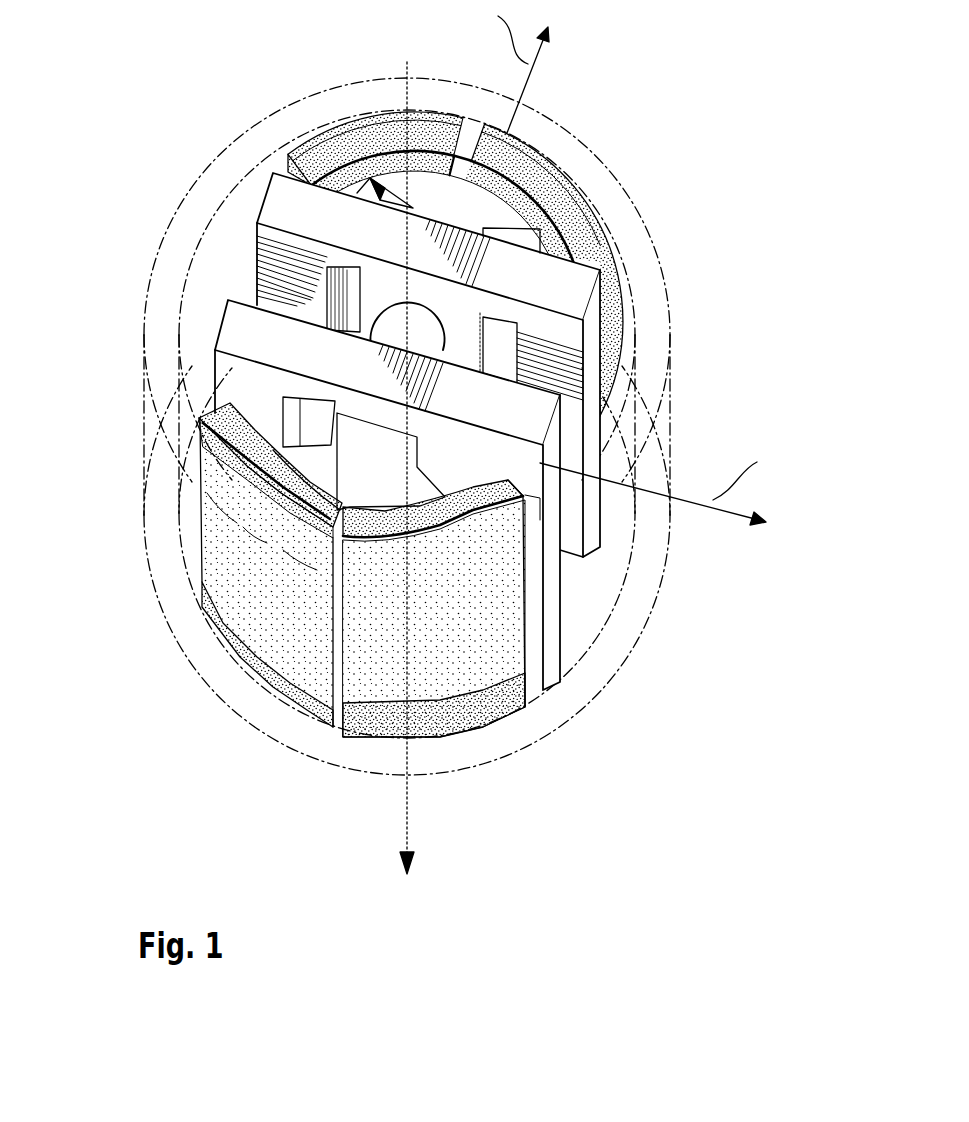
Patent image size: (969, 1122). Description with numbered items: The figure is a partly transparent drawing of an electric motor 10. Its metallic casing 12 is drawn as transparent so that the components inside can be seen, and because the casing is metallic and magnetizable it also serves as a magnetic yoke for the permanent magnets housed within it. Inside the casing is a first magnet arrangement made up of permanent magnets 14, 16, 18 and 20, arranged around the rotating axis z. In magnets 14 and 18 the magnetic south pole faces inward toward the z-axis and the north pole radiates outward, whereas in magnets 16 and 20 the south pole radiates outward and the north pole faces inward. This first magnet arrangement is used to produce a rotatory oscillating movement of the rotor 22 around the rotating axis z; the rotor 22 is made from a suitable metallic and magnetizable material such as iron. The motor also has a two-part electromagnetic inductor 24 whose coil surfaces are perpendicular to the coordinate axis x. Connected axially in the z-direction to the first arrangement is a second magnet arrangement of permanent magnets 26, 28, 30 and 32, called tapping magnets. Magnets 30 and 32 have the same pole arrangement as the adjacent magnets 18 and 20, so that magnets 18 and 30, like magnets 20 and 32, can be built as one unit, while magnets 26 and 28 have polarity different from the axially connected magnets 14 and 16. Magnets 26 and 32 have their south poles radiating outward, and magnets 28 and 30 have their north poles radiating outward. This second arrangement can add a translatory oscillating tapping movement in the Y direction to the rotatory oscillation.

The electric motor 10 is at (698, 100).
The metallic casing 12 is at (655, 292).
The permanent magnet 14 is at (615, 345).
The permanent magnet 16 is at (381, 178).
The permanent magnet 18 is at (503, 630).
The permanent magnet 20 is at (258, 603).
The rotor 22 is at (493, 212).
The two-part electromagnetic inductor 24 is at (262, 192).
The permanent magnet 26 is at (580, 217).
The permanent magnet 28 is at (333, 138).
The permanent magnet 30 is at (545, 505).
The permanent magnet 32 is at (230, 484).